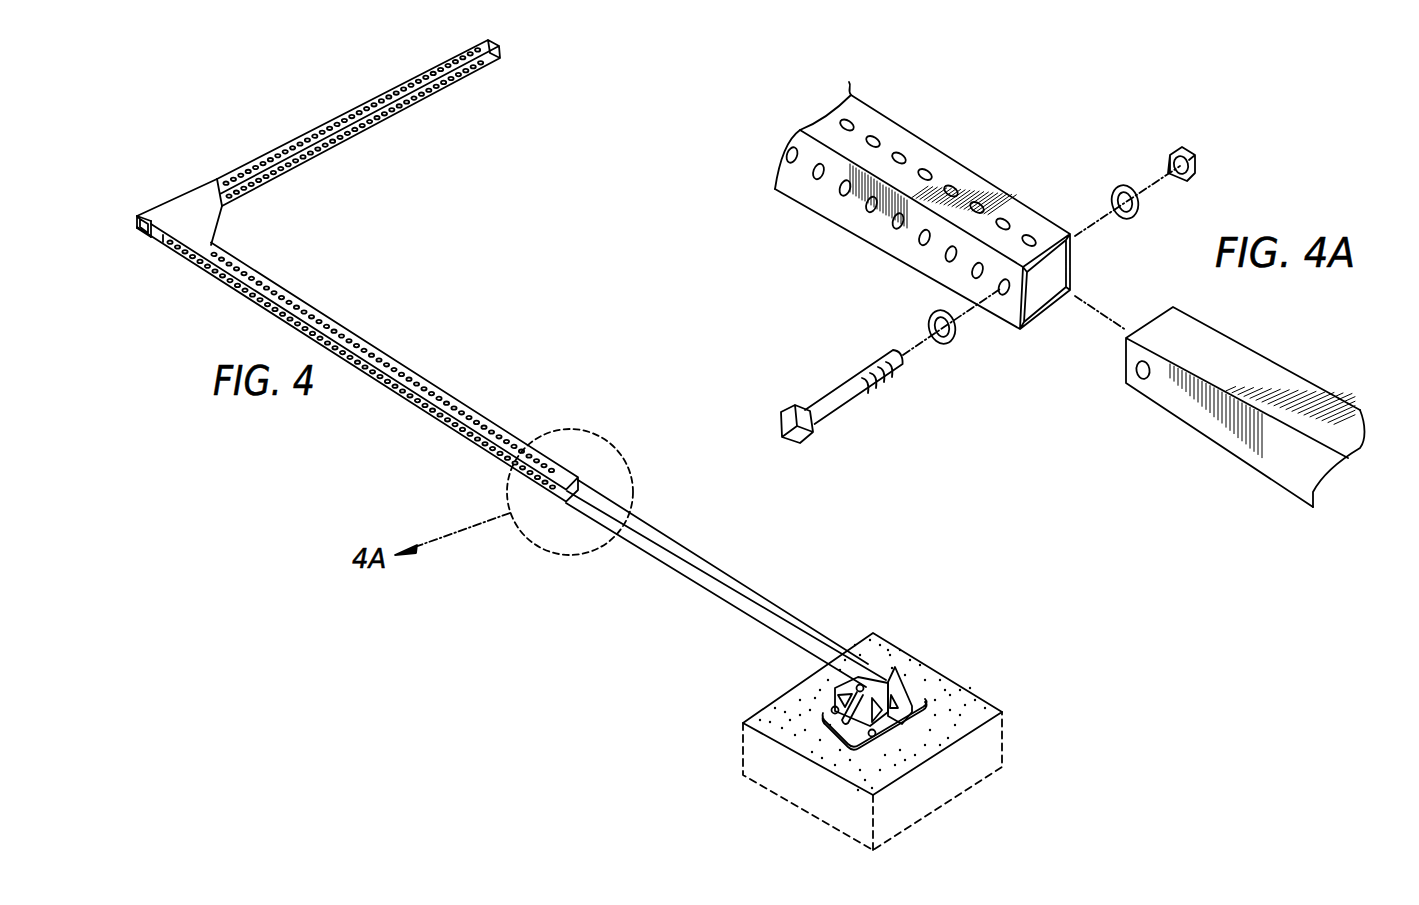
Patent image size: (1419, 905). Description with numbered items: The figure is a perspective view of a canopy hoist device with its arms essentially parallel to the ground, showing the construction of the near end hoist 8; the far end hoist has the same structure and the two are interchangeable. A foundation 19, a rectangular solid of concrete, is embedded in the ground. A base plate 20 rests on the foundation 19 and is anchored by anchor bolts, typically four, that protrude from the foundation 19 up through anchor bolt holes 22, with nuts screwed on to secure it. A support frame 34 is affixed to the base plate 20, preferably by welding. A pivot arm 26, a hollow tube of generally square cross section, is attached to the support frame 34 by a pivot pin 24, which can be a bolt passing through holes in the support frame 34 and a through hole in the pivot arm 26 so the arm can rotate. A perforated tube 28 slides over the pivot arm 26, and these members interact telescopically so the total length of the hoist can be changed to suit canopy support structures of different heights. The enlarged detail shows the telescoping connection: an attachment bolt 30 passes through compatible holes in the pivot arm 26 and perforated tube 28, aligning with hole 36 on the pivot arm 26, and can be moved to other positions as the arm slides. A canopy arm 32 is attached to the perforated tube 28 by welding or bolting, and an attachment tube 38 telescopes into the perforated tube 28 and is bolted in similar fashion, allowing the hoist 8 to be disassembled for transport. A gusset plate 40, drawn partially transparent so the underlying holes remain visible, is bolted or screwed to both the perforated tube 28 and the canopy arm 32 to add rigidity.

In FIG. 4, the near end hoist 8 is at (717, 583).
In FIG. 4, the foundation 19 is at (957, 684).
In FIG. 4, the base plate 20 is at (907, 732).
In FIG. 4, the anchor bolt holes 22 is at (834, 711).
In FIG. 4, the pivot pin 24 is at (859, 690).
In FIG. 4, the pivot arm 26 is at (706, 557).
In FIG. 4A, the pivot arm 26 is at (1262, 383).
In FIG. 4, the perforated tube 28 is at (313, 313).
In FIG. 4A, the perforated tube 28 is at (922, 153).
In FIG. 4A, the attachment bolt 30 is at (842, 398).
In FIG. 4, the canopy arm 32 is at (486, 68).
In FIG. 4, the support frame 34 is at (886, 672).
In FIG. 4A, the hole 36 is at (1143, 376).
In FIG. 4, the attachment tube 38 is at (158, 238).
In FIG. 4, the gusset plate 40 is at (203, 215).